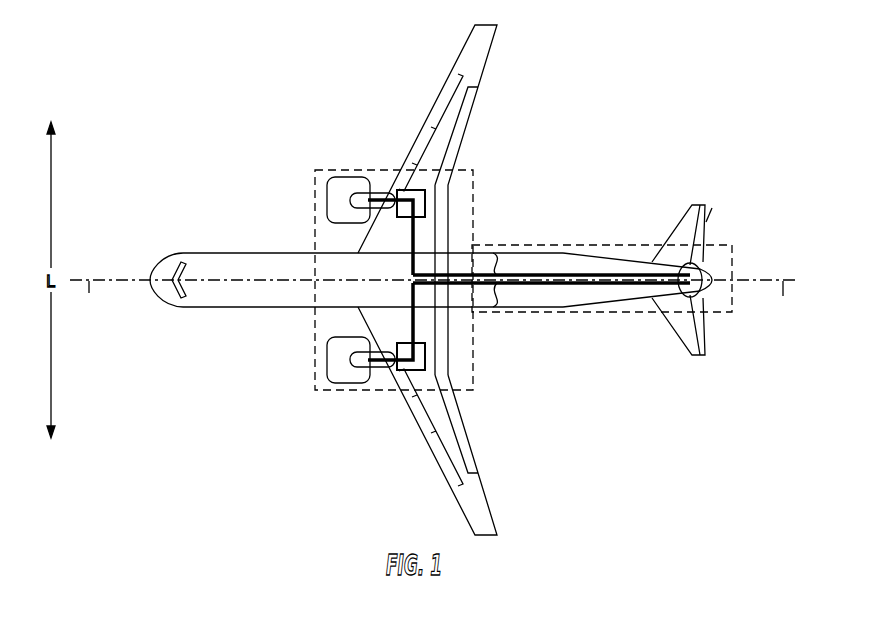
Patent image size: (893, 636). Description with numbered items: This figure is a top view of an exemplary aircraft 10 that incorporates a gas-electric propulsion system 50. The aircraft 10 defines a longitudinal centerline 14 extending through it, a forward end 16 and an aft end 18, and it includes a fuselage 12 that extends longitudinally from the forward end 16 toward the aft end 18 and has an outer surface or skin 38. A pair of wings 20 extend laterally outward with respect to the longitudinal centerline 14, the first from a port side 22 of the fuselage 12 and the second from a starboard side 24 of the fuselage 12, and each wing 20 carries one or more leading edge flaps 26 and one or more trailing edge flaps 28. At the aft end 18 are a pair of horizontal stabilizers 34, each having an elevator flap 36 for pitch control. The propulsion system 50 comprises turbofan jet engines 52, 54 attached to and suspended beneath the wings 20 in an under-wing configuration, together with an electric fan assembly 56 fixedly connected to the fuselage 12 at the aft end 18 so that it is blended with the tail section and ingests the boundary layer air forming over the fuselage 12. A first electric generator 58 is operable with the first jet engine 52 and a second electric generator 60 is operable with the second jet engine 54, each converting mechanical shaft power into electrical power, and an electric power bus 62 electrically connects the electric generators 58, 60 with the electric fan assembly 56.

The aircraft 10 is at (590, 108).
The fuselage 12 is at (196, 305).
The longitudinal centerline 14 is at (437, 306).
The forward end 16 is at (150, 295).
The aft end 18 is at (668, 350).
The wings 20 is at (480, 45).
The port side 22 is at (257, 315).
The starboard side 24 is at (258, 252).
The leading edge flaps 26 is at (420, 428).
The trailing edge flaps 28 is at (468, 432).
The horizontal stabilizers 34 is at (688, 222).
The elevator flap 36 is at (707, 222).
The outer surface or skin 38 is at (551, 286).
The propulsion system 50 is at (540, 246).
The first jet engine 52 is at (331, 382).
The second jet engine 54 is at (338, 186).
The electric fan assembly 56 is at (703, 262).
The first electric generator 58 is at (398, 370).
The second electric generator 60 is at (428, 194).
The electric power bus 62 is at (456, 292).